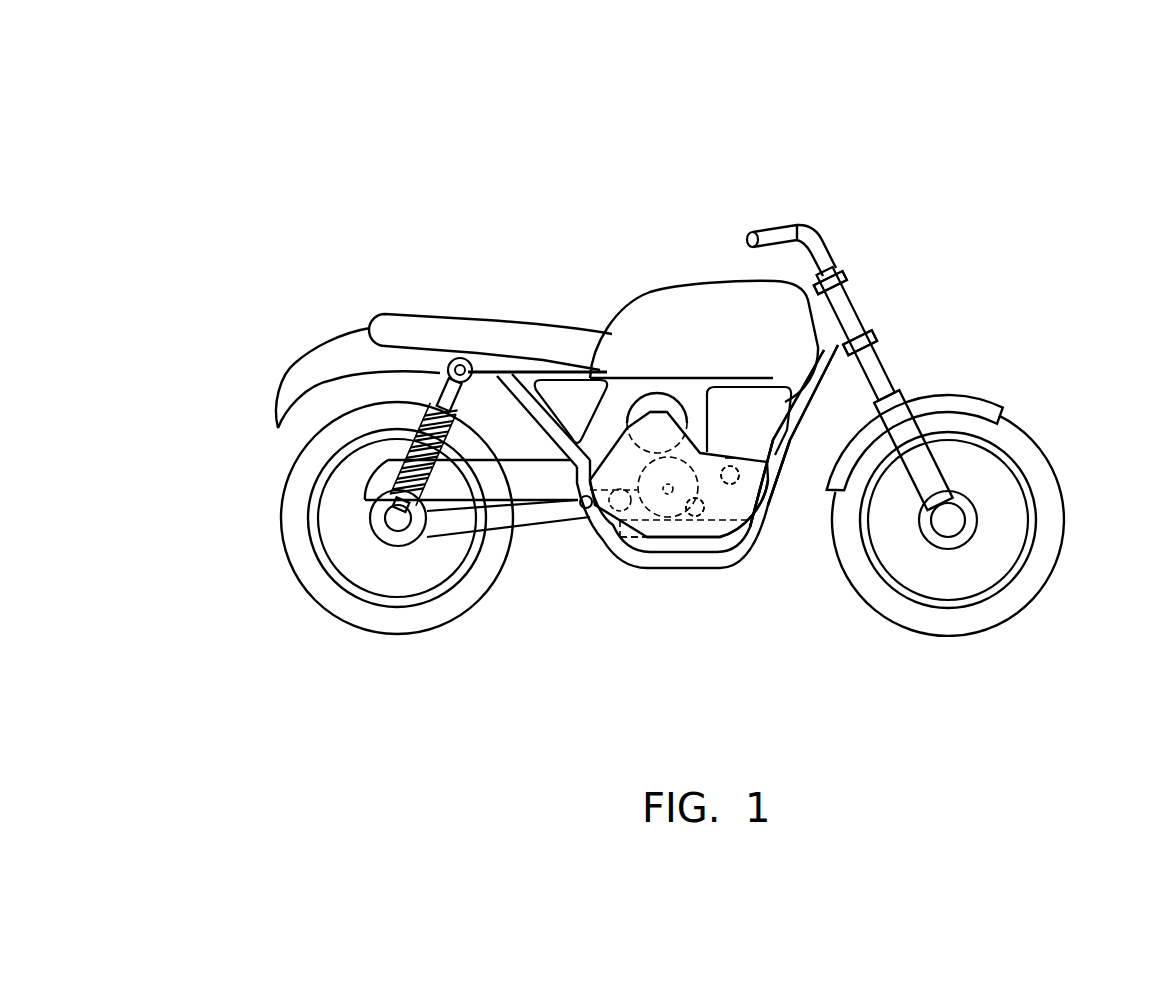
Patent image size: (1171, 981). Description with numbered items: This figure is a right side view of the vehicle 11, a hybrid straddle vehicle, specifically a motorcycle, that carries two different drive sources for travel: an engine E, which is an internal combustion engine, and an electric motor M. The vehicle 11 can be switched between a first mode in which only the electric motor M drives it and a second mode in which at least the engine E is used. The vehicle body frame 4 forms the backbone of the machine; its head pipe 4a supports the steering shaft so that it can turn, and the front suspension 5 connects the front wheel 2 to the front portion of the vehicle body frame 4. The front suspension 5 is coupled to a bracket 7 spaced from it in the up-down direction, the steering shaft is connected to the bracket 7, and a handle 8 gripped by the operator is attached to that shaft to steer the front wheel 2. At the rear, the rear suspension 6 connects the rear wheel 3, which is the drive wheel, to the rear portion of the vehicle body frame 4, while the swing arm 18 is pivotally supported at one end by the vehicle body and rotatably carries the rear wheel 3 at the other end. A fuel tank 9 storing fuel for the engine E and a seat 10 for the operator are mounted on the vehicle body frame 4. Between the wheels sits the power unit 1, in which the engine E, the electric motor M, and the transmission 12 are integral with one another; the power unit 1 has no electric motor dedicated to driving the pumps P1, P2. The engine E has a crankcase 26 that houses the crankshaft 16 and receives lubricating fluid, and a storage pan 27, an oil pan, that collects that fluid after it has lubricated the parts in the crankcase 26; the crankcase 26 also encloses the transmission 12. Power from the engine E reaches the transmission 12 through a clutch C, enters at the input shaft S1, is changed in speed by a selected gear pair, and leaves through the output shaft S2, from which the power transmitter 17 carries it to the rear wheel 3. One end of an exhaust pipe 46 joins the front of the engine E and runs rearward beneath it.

The vehicle 11 is at (933, 178).
The power unit 1 is at (612, 432).
The front wheel 2 is at (1065, 494).
The rear wheel 3 is at (283, 525).
The vehicle body frame 4 is at (807, 395).
The head pipe 4a is at (838, 297).
The front suspension 5 is at (933, 477).
The rear suspension 6 is at (420, 405).
The bracket 7 is at (877, 334).
The handle 8 is at (770, 227).
The fuel tank 9 is at (665, 313).
The seat 10 is at (565, 321).
The transmission 12 is at (730, 458).
The crankshaft 16 is at (730, 455).
The power transmitter 17 is at (443, 527).
The swing arm 18 is at (530, 518).
The crankcase 26 is at (752, 497).
The storage pan 27 is at (718, 543).
The exhaust pipe 46 is at (790, 512).
The engine E is at (767, 407).
The electric motor M is at (670, 405).
The clutch C is at (702, 453).
The input shaft S1 is at (648, 527).
The output shaft S2 is at (618, 523).
The pump P1 is at (698, 513).
The pump P2 is at (695, 507).